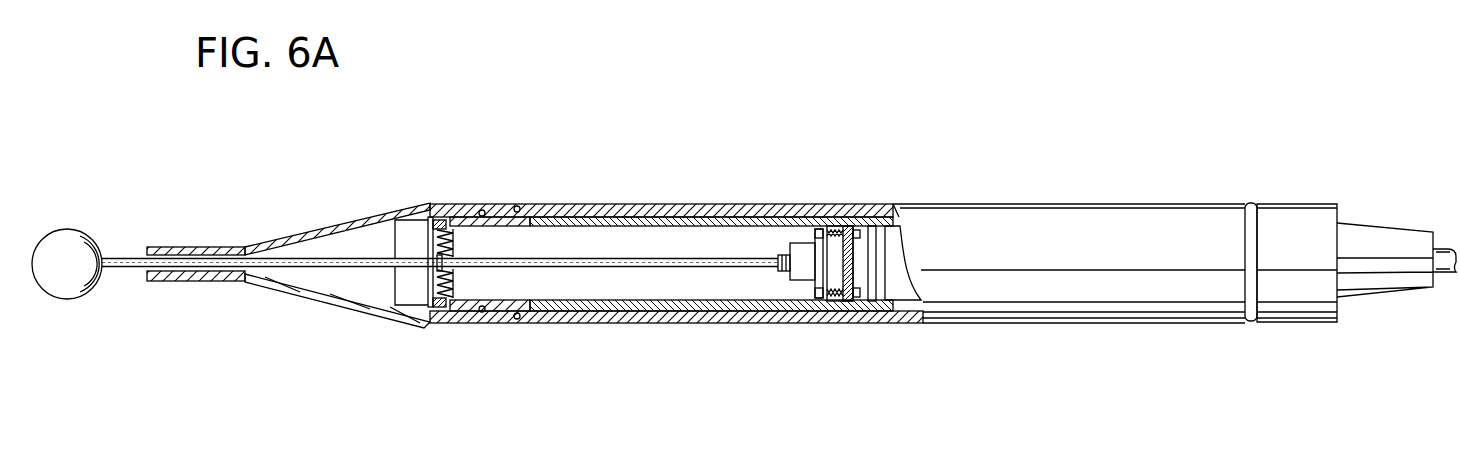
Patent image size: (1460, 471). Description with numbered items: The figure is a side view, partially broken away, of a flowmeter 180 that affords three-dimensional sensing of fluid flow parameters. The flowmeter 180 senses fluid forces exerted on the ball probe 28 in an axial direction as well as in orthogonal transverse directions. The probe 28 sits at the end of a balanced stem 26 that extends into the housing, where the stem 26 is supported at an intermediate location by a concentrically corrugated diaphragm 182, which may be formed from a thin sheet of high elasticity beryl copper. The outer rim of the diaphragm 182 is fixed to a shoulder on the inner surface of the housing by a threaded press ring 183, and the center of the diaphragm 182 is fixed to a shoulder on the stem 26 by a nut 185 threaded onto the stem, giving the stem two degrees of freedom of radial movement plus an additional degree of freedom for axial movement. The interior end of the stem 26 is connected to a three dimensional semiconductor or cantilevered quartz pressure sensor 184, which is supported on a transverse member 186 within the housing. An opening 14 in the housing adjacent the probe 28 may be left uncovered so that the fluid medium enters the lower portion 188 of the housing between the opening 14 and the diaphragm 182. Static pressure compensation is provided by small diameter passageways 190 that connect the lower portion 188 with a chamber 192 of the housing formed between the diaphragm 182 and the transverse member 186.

The probe 28 is at (77, 234).
The opening 14 is at (147, 275).
The stylus shaft 26 is at (596, 262).
The lower portion of the housing 188 is at (331, 239).
The concentrically corrugated diaphragm 182 is at (433, 283).
The threaded press ring 183 is at (430, 227).
The small diameter passageways 190 is at (443, 221).
The nut 185 is at (452, 258).
The chamber 192 is at (660, 294).
The pressure sensor 184 is at (790, 242).
The transverse member 186 is at (856, 272).
The flowmeter 180 is at (838, 197).